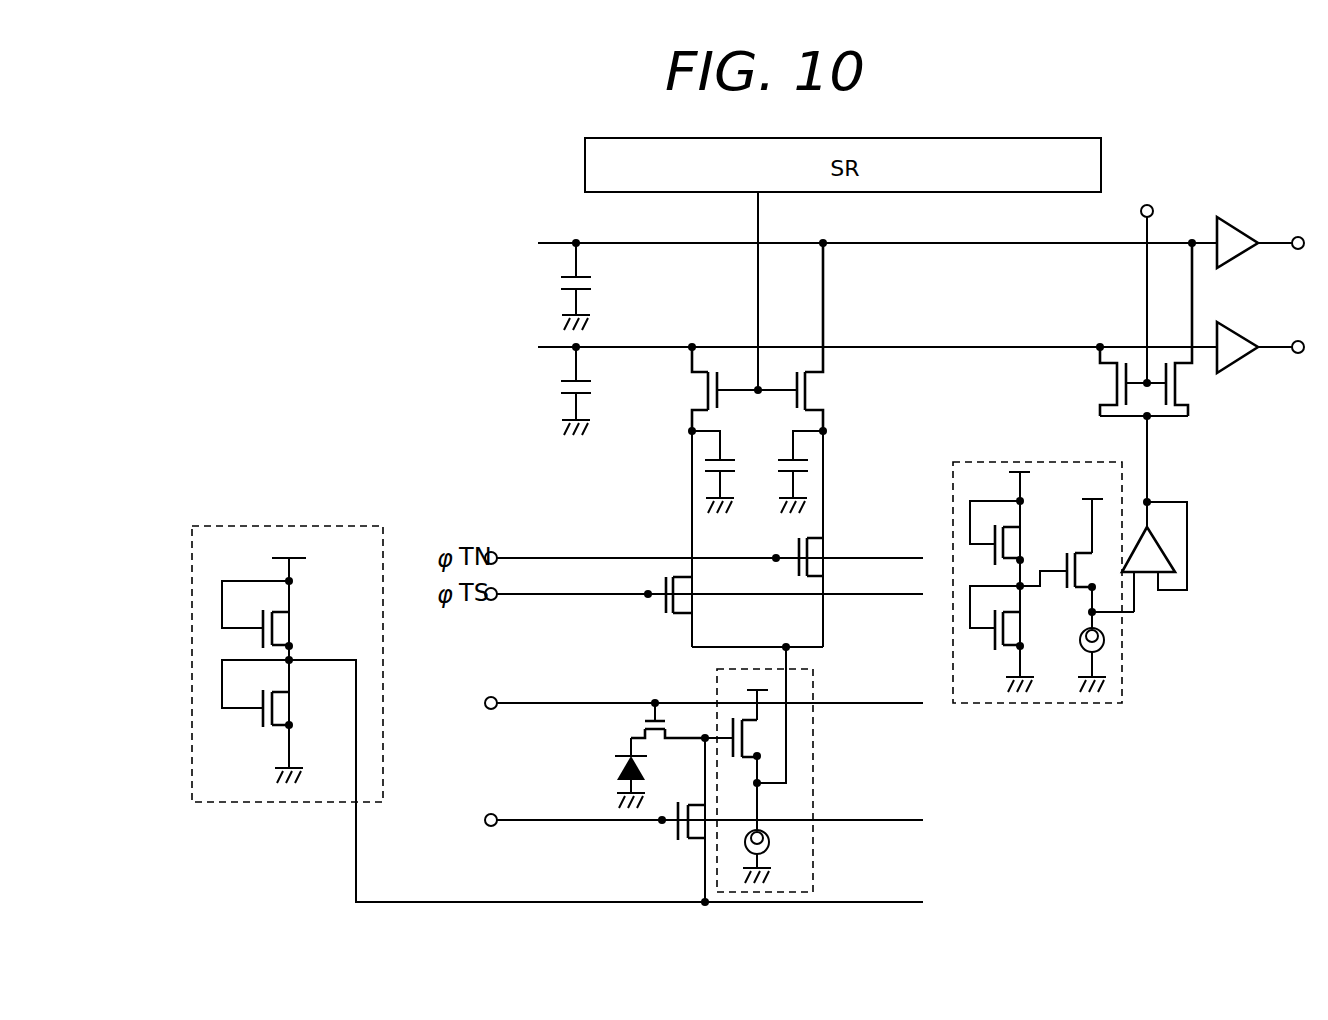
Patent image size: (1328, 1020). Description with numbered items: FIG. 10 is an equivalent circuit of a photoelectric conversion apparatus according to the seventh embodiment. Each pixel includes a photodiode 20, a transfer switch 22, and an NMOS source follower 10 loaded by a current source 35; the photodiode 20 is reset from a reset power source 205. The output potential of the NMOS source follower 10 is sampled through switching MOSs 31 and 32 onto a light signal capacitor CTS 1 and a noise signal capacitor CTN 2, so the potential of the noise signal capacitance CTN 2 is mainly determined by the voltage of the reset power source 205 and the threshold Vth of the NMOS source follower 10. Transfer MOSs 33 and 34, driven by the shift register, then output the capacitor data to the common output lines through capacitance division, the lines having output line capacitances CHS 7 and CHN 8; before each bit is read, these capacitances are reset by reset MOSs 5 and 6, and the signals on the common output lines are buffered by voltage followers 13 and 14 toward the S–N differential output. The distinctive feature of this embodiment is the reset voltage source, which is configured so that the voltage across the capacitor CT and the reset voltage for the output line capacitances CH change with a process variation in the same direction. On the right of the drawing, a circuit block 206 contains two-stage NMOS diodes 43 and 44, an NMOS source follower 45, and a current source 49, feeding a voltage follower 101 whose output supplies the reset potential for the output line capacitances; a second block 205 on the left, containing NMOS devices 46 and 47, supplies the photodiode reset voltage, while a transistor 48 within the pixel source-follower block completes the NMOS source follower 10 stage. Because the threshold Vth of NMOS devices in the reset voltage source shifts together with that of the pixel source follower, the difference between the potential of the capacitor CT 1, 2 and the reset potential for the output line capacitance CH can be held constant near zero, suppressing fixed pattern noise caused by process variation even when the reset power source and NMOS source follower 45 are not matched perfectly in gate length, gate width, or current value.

The light signal capacitor CTS 1 is at (730, 458).
The noise signal capacitor CTN 2 is at (825, 446).
The reset MOS 5 is at (1103, 388).
The reset MOS 6 is at (1190, 392).
The output line capacitance CHS 7 is at (596, 387).
The output line capacitance CHN 8 is at (596, 284).
The NMOS source follower 10 is at (815, 758).
The voltage follower 13 is at (1240, 217).
The voltage follower 14 is at (1245, 373).
The photodiode 20 is at (615, 768).
The transfer switch 22 is at (636, 732).
The switching MOS 31 is at (688, 590).
The switching MOS 32 is at (823, 548).
The transfer MOS 33 is at (690, 402).
The transfer MOS 34 is at (825, 385).
The current source 35 is at (766, 845).
The NMOS diode 43 is at (1012, 540).
The NMOS diode 44 is at (1010, 625).
The NMOS source follower 45 is at (1072, 595).
The transistor 46 is at (285, 620).
The transistor 47 is at (285, 708).
The amplifying transistor 48 is at (752, 730).
The current source 49 is at (1105, 640).
The voltage follower 101 is at (1166, 556).
The reset power source 205 is at (350, 526).
The bias circuit 206 is at (1038, 703).